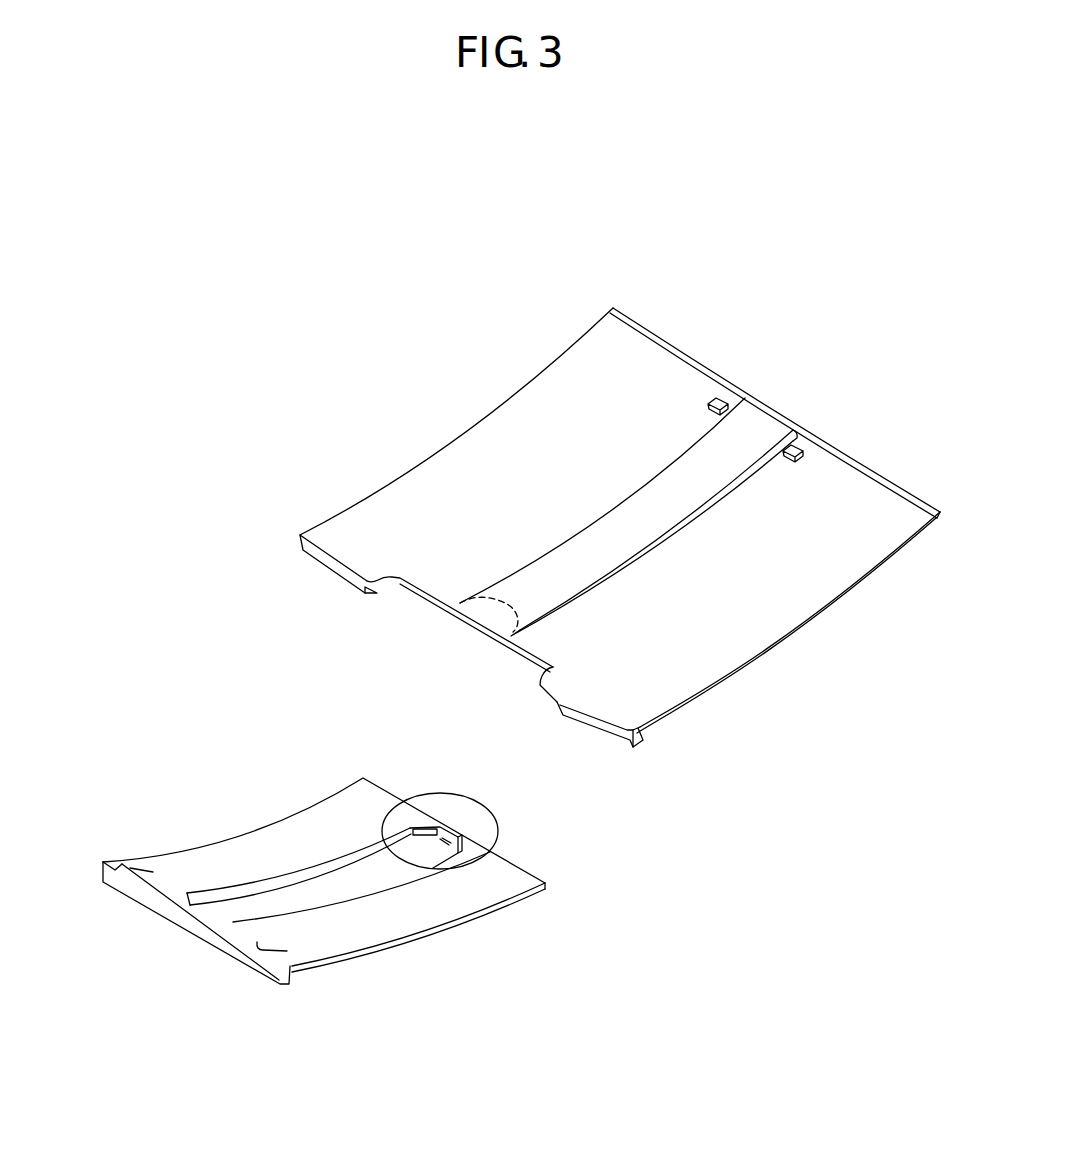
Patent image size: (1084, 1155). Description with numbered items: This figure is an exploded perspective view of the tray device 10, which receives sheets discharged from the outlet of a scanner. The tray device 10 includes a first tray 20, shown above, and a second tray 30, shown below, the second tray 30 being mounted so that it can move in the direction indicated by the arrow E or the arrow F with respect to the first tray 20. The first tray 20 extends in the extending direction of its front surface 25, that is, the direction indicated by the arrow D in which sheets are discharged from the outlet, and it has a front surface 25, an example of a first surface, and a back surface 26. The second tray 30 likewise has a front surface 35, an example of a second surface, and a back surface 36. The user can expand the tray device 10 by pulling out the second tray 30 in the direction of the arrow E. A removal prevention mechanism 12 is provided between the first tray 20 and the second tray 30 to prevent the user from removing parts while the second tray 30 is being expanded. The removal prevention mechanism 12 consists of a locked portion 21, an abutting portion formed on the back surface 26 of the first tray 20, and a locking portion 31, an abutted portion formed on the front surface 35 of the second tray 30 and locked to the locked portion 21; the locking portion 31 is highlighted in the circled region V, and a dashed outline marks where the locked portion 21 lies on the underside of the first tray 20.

The tray device 10 is at (150, 556).
The removal prevention mechanism 12 is at (570, 750).
The first tray 20 is at (430, 457).
The locked portion 21 is at (493, 617).
The front surface 25 is at (520, 403).
The back surface 26 is at (847, 662).
The second tray 30 is at (233, 833).
The locking portion 31 is at (456, 830).
The front surface 35 is at (297, 820).
The back surface 36 is at (386, 980).
The enlarged view region V is at (500, 837).
The arrow D is at (753, 713).
The arrow E is at (567, 933).
The arrow F is at (497, 998).